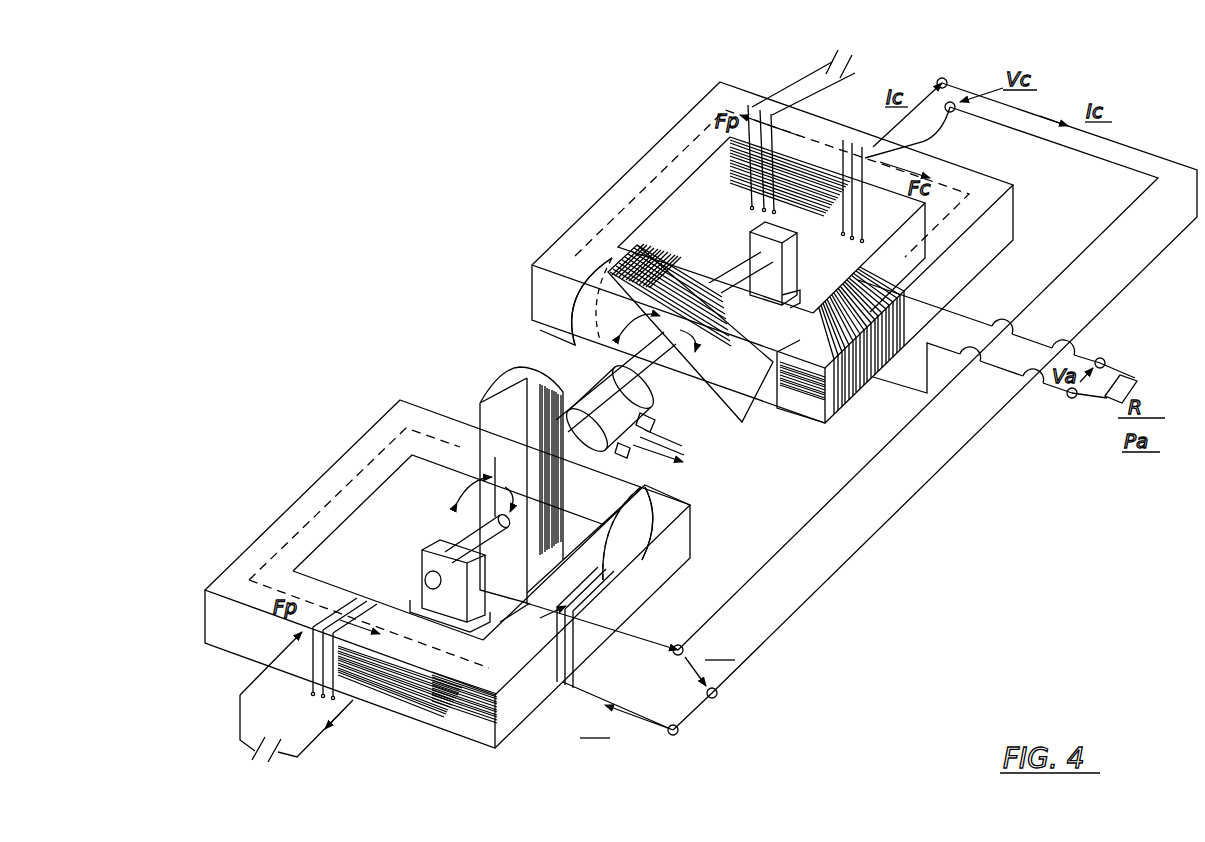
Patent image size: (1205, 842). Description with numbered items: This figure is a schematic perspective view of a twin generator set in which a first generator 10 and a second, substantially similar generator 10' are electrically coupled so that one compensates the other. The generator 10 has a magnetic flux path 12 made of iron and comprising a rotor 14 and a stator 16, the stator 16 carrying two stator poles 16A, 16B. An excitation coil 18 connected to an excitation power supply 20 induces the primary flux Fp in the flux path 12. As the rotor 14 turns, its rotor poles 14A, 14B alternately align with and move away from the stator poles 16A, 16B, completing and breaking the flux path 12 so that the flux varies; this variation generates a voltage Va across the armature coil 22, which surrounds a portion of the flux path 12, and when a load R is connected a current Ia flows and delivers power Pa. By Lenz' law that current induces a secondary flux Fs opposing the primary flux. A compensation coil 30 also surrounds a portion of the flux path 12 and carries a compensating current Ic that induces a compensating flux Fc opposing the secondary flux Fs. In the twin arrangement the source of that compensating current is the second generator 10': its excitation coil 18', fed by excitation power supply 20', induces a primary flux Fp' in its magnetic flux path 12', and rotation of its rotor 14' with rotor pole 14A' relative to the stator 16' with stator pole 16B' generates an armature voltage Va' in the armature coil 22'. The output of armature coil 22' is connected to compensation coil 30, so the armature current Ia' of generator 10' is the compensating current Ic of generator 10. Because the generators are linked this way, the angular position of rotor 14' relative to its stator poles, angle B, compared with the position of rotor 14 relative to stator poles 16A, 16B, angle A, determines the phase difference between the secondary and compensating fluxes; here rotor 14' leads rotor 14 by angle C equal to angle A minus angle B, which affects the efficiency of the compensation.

The generator 10 is at (541, 82).
The magnetic flux path 12 is at (754, 183).
The stator 16 is at (755, 252).
The stator pole 16A is at (797, 400).
The stator pole 16B is at (524, 285).
The excitation coil 18 is at (733, 163).
The excitation power supply 20 is at (871, 58).
The armature coil 22 is at (881, 248).
The compensation coil 30 is at (940, 122).
The rotor 14 is at (548, 397).
The rotor pole 14A is at (711, 375).
The rotor pole 14B is at (640, 340).
The second generator 10' is at (221, 395).
The magnetic flux path 12' is at (322, 548).
The stator 16' is at (422, 574).
The stator pole 16B' is at (431, 485).
The rotor 14' is at (441, 493).
The rotor pole 14A' is at (671, 516).
The excitation coil 18' is at (305, 657).
The excitation power supply 20' is at (249, 728).
The armature coil 22' is at (584, 653).